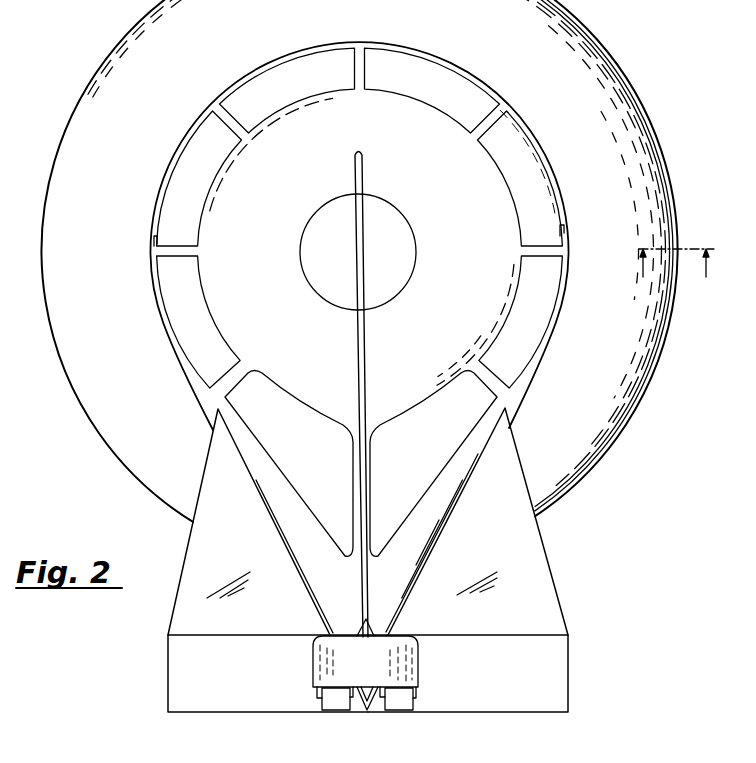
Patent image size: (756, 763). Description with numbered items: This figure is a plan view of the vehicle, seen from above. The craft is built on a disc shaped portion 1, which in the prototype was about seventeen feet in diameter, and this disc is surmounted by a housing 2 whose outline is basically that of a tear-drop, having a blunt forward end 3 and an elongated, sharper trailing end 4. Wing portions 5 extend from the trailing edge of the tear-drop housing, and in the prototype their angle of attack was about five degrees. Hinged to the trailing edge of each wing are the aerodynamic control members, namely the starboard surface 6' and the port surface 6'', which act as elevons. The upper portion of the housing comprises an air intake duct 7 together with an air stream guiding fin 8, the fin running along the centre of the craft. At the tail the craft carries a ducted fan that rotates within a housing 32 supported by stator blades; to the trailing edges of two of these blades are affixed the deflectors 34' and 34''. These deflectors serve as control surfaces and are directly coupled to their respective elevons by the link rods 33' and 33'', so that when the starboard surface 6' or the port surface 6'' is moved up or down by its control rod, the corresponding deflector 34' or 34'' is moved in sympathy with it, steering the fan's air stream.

The disc shaped portion 1 is at (130, 45).
The housing 2 is at (234, 176).
The blunt forward end 3 is at (356, 46).
The elongated sharper trailing end 4 is at (424, 612).
The wing portions 5 is at (182, 577).
The starboard surface 6' is at (479, 673).
The port surface 6'' is at (257, 673).
The air intake duct 7 is at (380, 204).
The air stream guiding fin 8 is at (365, 148).
The housing 32 is at (418, 655).
The link rod 33' is at (426, 686).
The link rod 33'' is at (312, 687).
The deflector 34' is at (416, 714).
The deflector 34'' is at (321, 714).